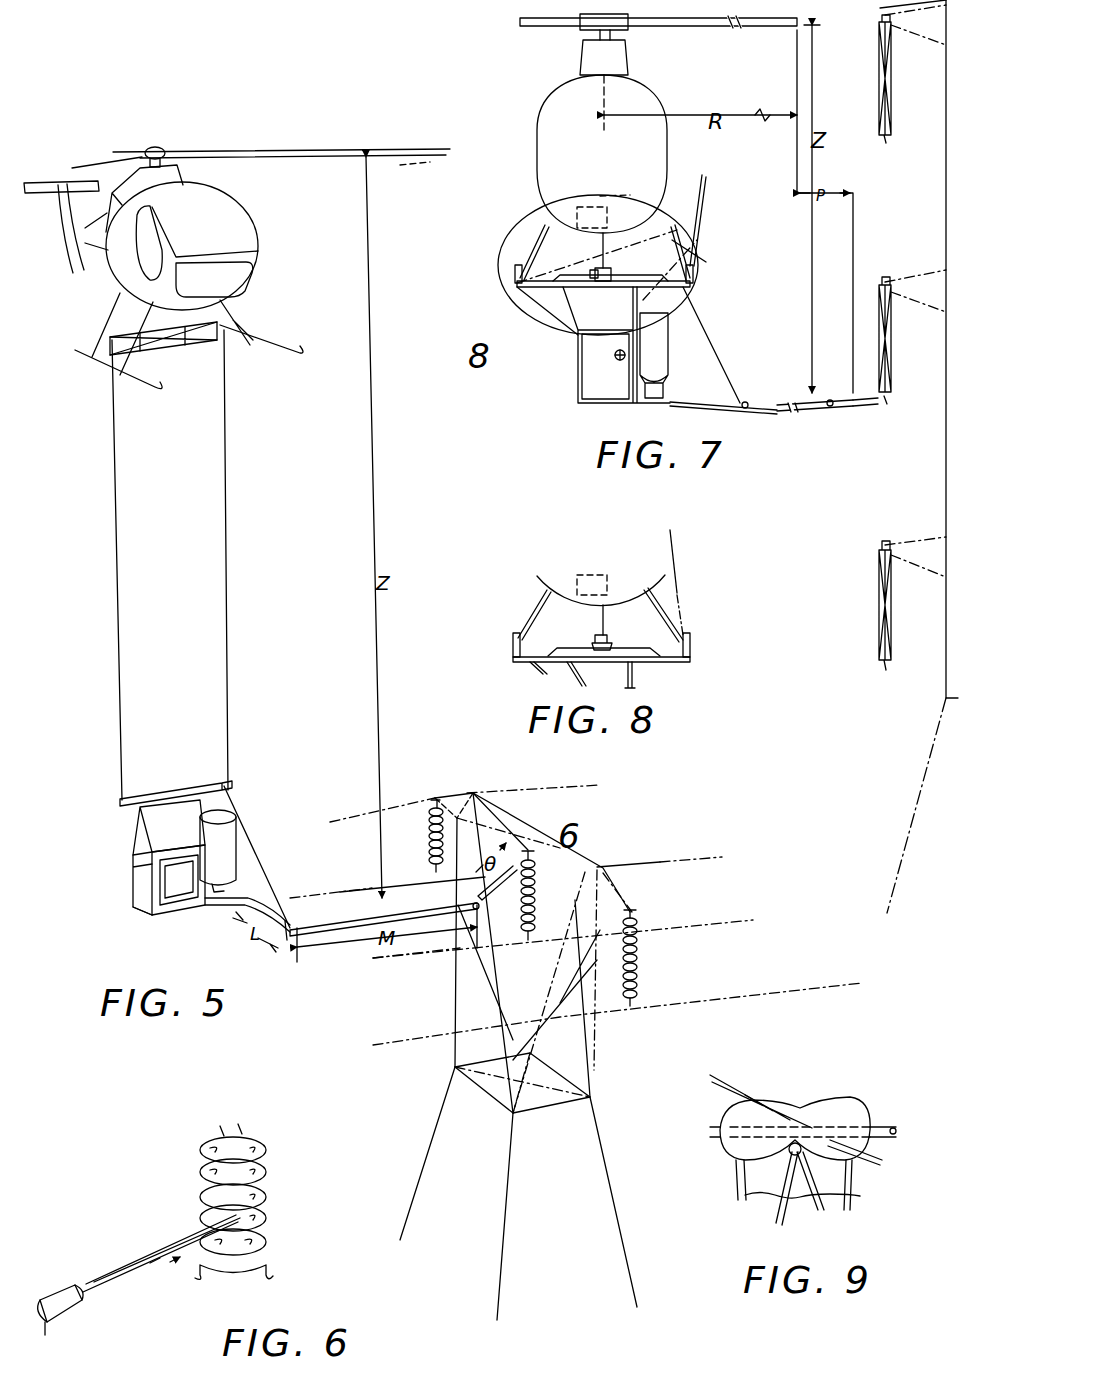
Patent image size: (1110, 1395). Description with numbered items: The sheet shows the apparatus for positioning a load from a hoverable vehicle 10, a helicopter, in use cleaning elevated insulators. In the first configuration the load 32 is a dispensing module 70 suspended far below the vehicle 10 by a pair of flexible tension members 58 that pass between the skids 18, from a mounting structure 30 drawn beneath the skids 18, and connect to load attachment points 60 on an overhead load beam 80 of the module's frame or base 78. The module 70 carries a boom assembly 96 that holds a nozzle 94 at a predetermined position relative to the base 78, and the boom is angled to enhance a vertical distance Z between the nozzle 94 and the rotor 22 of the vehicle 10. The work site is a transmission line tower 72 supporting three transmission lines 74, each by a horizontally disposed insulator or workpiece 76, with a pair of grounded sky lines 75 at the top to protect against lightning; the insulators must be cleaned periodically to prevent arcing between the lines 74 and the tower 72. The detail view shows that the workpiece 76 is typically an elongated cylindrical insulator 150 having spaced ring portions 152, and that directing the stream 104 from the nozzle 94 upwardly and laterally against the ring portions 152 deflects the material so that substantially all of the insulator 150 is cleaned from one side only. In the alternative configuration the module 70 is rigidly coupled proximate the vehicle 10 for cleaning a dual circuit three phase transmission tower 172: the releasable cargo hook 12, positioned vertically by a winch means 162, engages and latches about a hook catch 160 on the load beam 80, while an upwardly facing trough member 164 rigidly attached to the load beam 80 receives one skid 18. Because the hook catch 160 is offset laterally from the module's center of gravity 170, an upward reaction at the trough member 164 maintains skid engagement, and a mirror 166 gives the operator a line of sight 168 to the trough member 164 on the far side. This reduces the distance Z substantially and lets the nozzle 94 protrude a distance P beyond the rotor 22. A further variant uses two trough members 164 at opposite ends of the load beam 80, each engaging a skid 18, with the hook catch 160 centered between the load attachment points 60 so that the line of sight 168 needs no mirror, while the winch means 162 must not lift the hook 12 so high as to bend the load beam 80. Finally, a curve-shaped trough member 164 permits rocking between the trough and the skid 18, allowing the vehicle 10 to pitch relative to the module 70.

In FIG. 5, the hoverable vehicle 10 is at (103, 293).
In FIG. 7, the hoverable vehicle 10 is at (540, 201).
In FIG. 8, the hoverable vehicle 10 is at (540, 591).
In FIG. 7, the releasable cargo hook 12 is at (604, 268).
In FIG. 8, the releasable cargo hook 12 is at (605, 629).
In FIG. 7, the skids 18 is at (510, 259).
In FIG. 8, the skids 18 is at (688, 637).
In FIG. 9, the skids 18 is at (718, 1101).
In FIG. 5, the rotor 22 is at (320, 157).
In FIG. 7, the rotor 22 is at (695, 28).
In FIG. 5, the skid mounting frame 30 is at (197, 348).
In FIG. 5, the load 32 is at (133, 831).
In FIG. 5, the flexible tension members 58 is at (224, 592).
In FIG. 7, the load attachment points 60 is at (546, 311).
In FIG. 8, the load attachment points 60 is at (548, 657).
In FIG. 5, the dispensing module 70 is at (135, 881).
In FIG. 7, the dispensing module 70 is at (575, 396).
In FIG. 6, the transmission line tower 72 is at (595, 1070).
In FIG. 6, the transmission lines 74 is at (630, 846).
In FIG. 7, the transmission lines 74 is at (893, 144).
In FIG. 7, the grounded sky lines 75 is at (882, 11).
In FIG. 6, the insulator or workpiece 76 is at (431, 823).
In FIG. 7, the insulator or workpiece 76 is at (929, 71).
In FIG. 7, the frame or base 78 is at (582, 357).
In FIG. 9, the frame or base 78 is at (858, 1197).
In FIG. 7, the load beam 80 is at (625, 290).
In FIG. 9, the load beam 80 is at (802, 1153).
In FIG. 6, the nozzle 94 is at (72, 1319).
In FIG. 7, the nozzle 94 is at (845, 411).
In FIG. 5, the boom assembly 96 is at (356, 918).
In FIG. 7, the boom assembly 96 is at (779, 401).
In FIG. 6, the stream 104 is at (520, 886).
In FIG. 7, the stream 104 is at (862, 413).
In FIG. 6, the elongated cylindrical insulator 150 is at (245, 1130).
In FIG. 7, the elongated cylindrical insulator 150 is at (892, 411).
In FIG. 6, the ring portions 152 is at (270, 1180).
In FIG. 7, the hook catch 160 is at (615, 271).
In FIG. 8, the hook catch 160 is at (612, 641).
In FIG. 7, the winch means 162 is at (600, 197).
In FIG. 8, the winch means 162 is at (609, 573).
In FIG. 7, the trough member 164 is at (517, 283).
In FIG. 8, the trough member 164 is at (513, 653).
In FIG. 9, the trough member 164 is at (855, 1099).
In FIG. 7, the mirror 166 is at (700, 241).
In FIG. 7, the line of sight 168 is at (692, 212).
In FIG. 8, the line of sight 168 is at (675, 584).
In FIG. 7, the center of gravity 170 is at (617, 361).
In FIG. 7, the dual circuit three phase transmission tower 172 is at (946, 491).